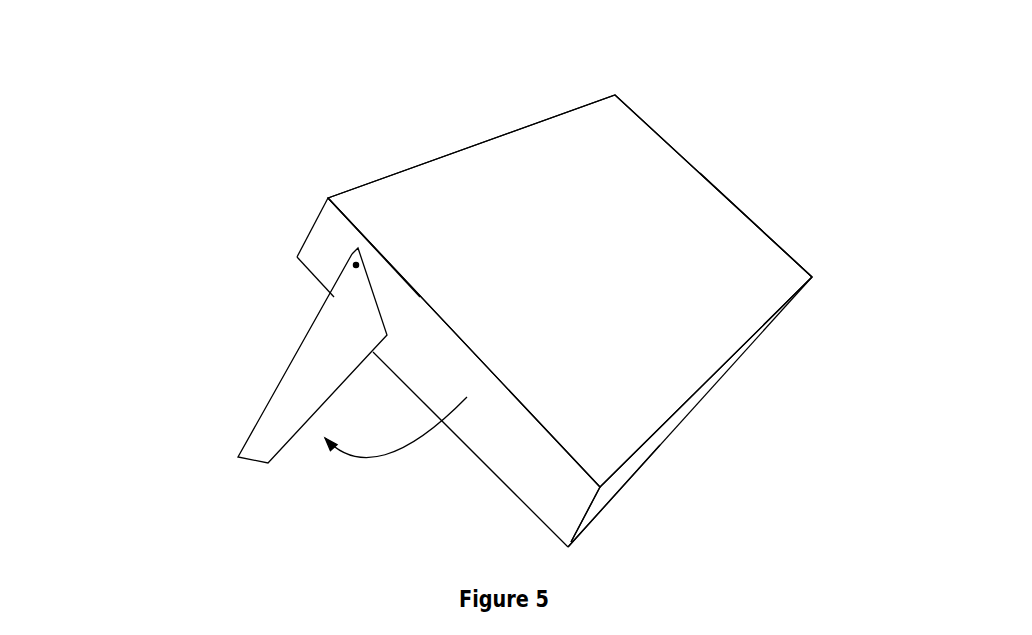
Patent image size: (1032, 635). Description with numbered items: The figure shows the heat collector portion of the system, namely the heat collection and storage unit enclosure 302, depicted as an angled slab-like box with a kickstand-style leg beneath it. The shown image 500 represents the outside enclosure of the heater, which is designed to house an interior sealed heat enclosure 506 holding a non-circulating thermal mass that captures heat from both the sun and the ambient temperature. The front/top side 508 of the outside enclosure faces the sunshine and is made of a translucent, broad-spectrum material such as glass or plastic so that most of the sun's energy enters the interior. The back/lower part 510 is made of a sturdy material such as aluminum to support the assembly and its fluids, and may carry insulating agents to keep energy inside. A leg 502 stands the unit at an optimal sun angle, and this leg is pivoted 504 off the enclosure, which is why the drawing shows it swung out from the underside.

The outside enclosure 500 is at (735, 102).
The heat collection and storage unit enclosure 302 is at (523, 203).
The front/top side 508 is at (418, 215).
The interior sealed heat enclosure 506 is at (755, 218).
The back/lower part 510 is at (625, 485).
The leg 502 is at (303, 397).
The pivot 504 is at (348, 260).